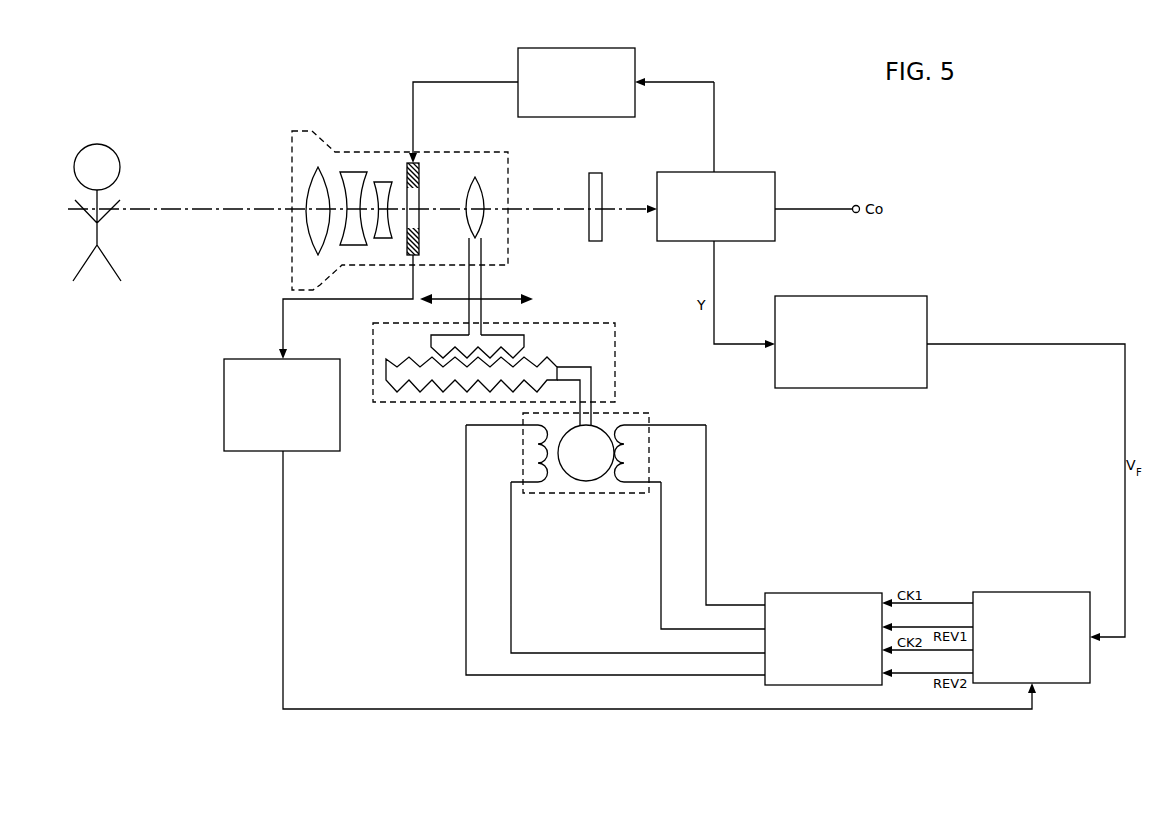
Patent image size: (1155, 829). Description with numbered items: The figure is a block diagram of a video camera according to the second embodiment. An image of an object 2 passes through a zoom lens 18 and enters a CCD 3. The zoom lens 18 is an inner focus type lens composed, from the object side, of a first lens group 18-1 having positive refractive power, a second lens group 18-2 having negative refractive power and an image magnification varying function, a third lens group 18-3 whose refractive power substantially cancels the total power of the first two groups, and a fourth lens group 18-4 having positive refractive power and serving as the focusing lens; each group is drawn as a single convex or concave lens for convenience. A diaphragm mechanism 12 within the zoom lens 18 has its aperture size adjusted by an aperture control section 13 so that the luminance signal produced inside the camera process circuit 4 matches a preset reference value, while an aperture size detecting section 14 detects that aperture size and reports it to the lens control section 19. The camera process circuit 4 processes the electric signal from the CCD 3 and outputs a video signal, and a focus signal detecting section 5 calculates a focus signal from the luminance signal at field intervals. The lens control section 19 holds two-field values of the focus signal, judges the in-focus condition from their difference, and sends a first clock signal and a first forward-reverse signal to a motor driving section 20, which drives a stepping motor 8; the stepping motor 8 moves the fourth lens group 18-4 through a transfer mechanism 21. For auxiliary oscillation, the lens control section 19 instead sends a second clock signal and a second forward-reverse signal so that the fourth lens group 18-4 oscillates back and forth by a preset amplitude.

The object 2 is at (103, 152).
The CCD 3 is at (603, 192).
The camera process circuit 4 is at (722, 172).
The focus signal detecting section 5 is at (857, 296).
The stepping motor 8 is at (627, 413).
The diaphragm mechanism 12 is at (417, 172).
The aperture control section 13 is at (620, 48).
The aperture size detecting section 14 is at (262, 359).
The zoom lens 18 is at (292, 129).
The first lens group 18-1 is at (318, 165).
The second lens group 18-2 is at (352, 172).
The third lens group 18-3 is at (383, 182).
The fourth lens group 18-4 is at (480, 185).
The lens control section 19 is at (1023, 592).
The motor driving section 20 is at (821, 593).
The transfer mechanism 21 is at (558, 323).